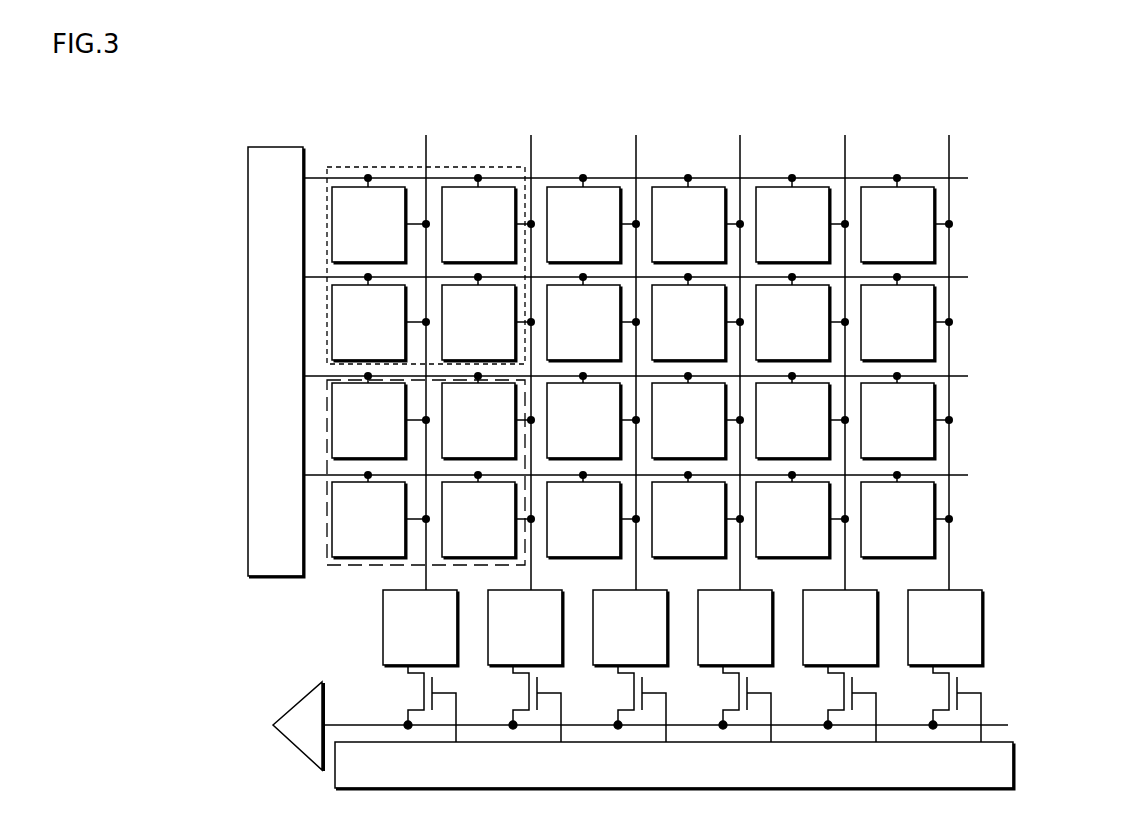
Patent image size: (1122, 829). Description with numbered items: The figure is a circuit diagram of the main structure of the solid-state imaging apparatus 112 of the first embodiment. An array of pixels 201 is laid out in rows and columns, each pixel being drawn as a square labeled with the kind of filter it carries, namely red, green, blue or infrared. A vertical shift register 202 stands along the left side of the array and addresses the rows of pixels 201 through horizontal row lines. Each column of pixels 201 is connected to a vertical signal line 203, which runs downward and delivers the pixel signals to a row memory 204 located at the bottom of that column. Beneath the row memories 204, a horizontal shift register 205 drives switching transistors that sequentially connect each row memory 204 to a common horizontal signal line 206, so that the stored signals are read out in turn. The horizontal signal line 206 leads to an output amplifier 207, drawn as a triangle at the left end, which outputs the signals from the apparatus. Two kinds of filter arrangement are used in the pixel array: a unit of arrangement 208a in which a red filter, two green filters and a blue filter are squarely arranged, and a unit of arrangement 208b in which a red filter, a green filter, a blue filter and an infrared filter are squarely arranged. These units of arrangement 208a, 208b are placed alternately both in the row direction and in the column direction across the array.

The solid-state imaging apparatus 112 is at (613, 61).
The pixel 201 is at (384, 187).
The vertical shift register 202 is at (275, 147).
The vertical signal line 203 is at (426, 136).
The row memory 204 is at (457, 637).
The horizontal shift register 205 is at (1013, 763).
The horizontal signal line 206 is at (1003, 726).
The output amplifier 207 is at (318, 694).
The unit of arrangement 208a is at (344, 167).
The unit of arrangement 208b is at (337, 565).